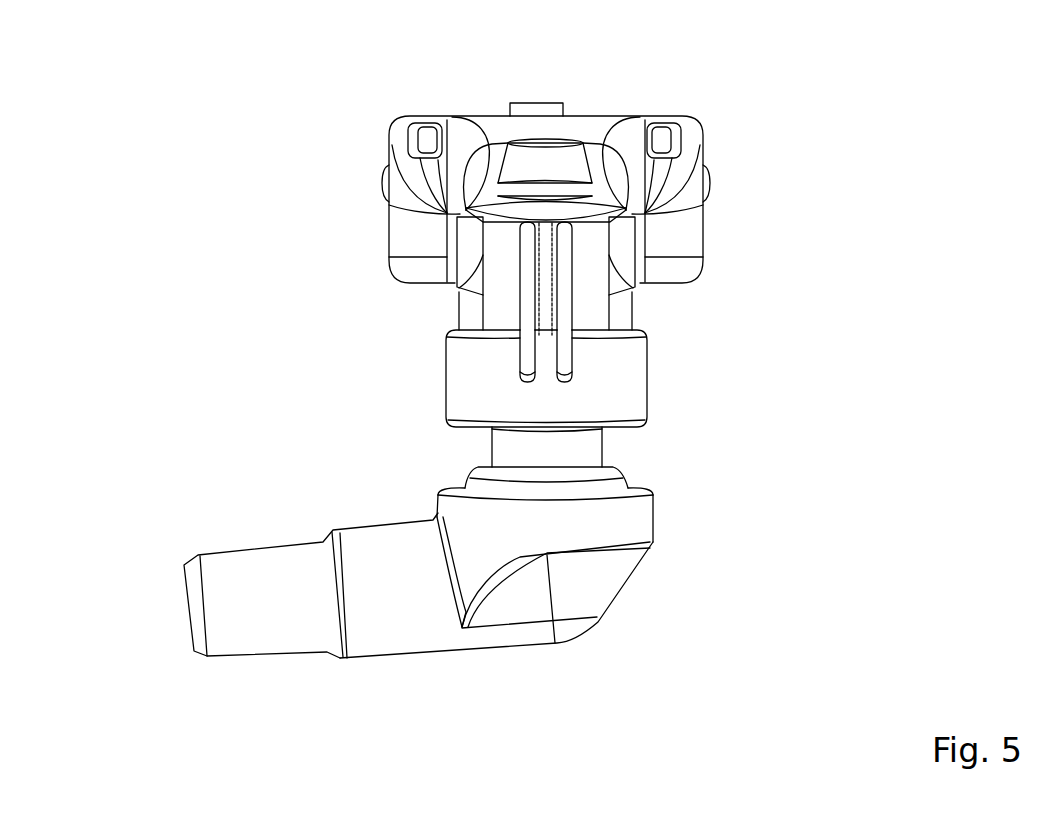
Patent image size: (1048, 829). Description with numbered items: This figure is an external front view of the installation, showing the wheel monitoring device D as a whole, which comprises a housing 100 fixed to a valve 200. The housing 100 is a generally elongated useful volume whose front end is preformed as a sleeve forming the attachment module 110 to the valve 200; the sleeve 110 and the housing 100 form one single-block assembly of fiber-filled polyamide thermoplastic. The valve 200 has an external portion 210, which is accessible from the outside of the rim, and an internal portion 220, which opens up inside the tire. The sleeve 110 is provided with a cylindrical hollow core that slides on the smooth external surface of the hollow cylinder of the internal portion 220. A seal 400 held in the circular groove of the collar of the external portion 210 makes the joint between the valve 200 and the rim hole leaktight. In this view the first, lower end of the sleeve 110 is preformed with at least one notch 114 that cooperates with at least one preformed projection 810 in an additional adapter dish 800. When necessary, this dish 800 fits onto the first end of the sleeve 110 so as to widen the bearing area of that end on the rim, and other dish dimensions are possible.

The wheel monitoring device D is at (696, 66).
The housing 100 is at (710, 159).
The attachment module 110 is at (631, 320).
The notch 114 is at (526, 296).
The adapter dish 800 is at (451, 400).
The projection 810 is at (538, 351).
The internal portion 220 is at (567, 450).
The seal 400 is at (466, 476).
The valve 200 is at (625, 647).
The external portion 210 is at (440, 649).